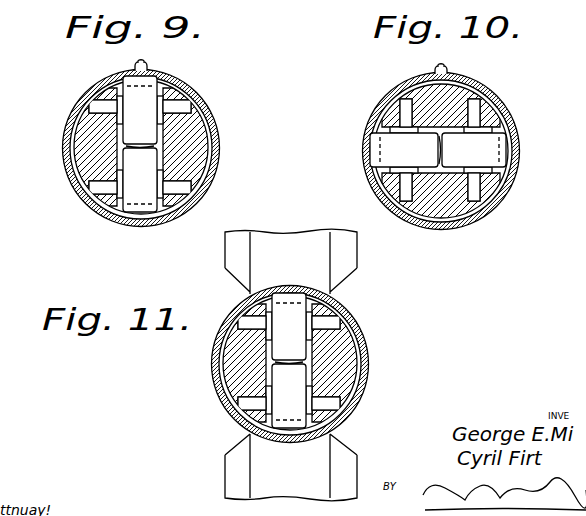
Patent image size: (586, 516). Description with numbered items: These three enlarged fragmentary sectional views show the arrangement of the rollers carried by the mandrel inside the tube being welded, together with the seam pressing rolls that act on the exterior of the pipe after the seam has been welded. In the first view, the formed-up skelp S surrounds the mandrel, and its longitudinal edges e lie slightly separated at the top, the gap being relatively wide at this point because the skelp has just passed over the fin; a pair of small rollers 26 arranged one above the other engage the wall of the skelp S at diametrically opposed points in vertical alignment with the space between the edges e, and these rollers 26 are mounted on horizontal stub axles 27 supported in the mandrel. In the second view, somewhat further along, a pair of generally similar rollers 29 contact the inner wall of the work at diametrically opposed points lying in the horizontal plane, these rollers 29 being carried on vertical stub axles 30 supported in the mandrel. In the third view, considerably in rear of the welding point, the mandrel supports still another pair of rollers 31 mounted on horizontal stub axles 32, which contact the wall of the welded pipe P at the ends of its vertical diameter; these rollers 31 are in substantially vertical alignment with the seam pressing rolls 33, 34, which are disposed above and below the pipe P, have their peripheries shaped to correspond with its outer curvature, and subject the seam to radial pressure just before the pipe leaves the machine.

In FIG. 9, the rollers 26 is at (140, 144).
In FIG. 9, the horizontal stub axles 27 is at (105, 108).
In FIG. 9, the skelp S is at (216, 150).
In FIG. 10, the skelp S is at (518, 150).
In FIG. 9, the longitudinal edges e is at (141, 57).
In FIG. 10, the longitudinal edges e is at (441, 61).
In FIG. 10, the rollers 29 is at (438, 150).
In FIG. 10, the vertical stub axles 30 is at (405, 103).
In FIG. 11, the rollers 31 is at (289, 360).
In FIG. 11, the horizontal stub axles 32 is at (252, 326).
In FIG. 11, the seam pressing roll 33 is at (291, 261).
In FIG. 11, the seam pressing roll 34 is at (291, 467).
In FIG. 11, the welded pipe P is at (368, 362).